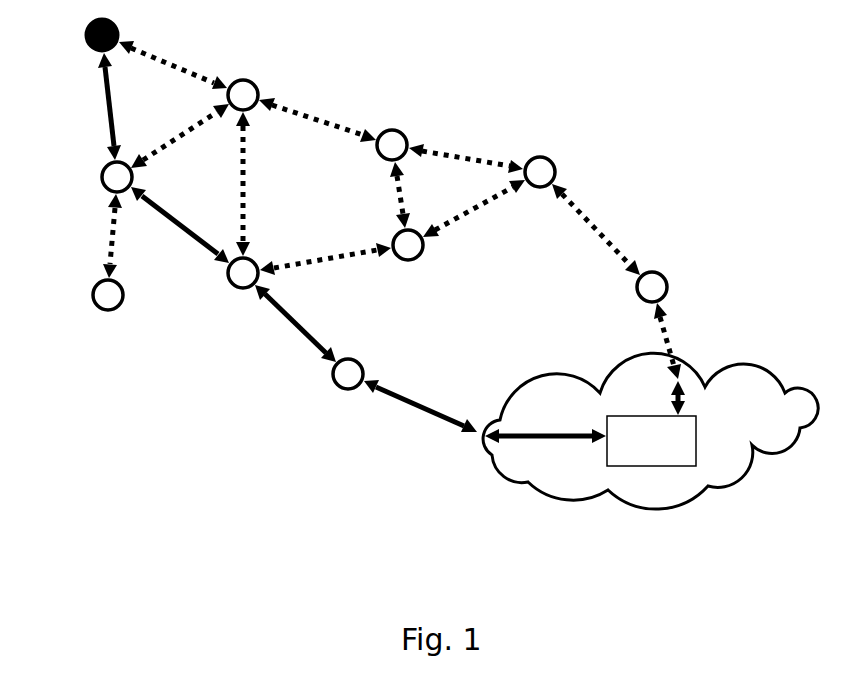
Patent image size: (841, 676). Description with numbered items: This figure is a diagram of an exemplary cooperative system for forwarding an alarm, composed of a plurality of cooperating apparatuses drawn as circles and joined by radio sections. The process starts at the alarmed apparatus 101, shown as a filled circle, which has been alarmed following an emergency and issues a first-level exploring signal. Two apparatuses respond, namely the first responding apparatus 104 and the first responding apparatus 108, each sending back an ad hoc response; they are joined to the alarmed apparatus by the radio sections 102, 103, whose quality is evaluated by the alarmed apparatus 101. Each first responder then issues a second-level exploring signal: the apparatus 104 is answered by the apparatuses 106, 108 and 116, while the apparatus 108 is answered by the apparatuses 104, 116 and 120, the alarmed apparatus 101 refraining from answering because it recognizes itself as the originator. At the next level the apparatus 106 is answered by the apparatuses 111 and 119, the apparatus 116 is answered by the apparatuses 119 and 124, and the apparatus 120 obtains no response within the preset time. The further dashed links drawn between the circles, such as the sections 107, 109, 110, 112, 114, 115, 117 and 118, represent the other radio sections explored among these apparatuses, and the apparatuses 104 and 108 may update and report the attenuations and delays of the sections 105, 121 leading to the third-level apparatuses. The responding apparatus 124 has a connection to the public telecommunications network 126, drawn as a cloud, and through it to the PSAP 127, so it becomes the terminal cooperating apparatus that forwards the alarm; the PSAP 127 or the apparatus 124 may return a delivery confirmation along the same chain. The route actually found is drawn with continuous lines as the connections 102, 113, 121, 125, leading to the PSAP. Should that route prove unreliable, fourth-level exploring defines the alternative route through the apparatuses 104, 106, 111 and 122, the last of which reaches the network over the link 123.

The alarmed apparatus 101 is at (118, 27).
The radio section 102 is at (100, 98).
The radio section 103 is at (183, 66).
The first responding apparatus 104 is at (258, 83).
The radio section 105 is at (318, 117).
The second-level responding apparatus 106 is at (400, 128).
The wireless link 107 is at (187, 125).
The first responding apparatus 108 is at (101, 167).
The wireless link 109 is at (238, 190).
The wireless link 110 is at (441, 152).
The third-level responding apparatus 111 is at (555, 156).
The wireless link 112 is at (103, 244).
The connection 113 is at (178, 237).
The wireless link 114 is at (405, 193).
The wireless link 115 is at (588, 205).
The second-level responding apparatus 116 is at (228, 283).
The wireless link 117 is at (358, 253).
The wireless link 118 is at (485, 209).
The third-level responding apparatus 119 is at (418, 258).
The second-level responding apparatus 120 is at (96, 310).
The connection 121 is at (285, 328).
The responding apparatus 122 is at (668, 275).
The wireless link to network 123 is at (680, 350).
The terminal cooperating apparatus 124 is at (331, 388).
The connection 125 is at (460, 434).
The public telecommunications network 126 is at (547, 497).
The PSAP 127 is at (664, 467).